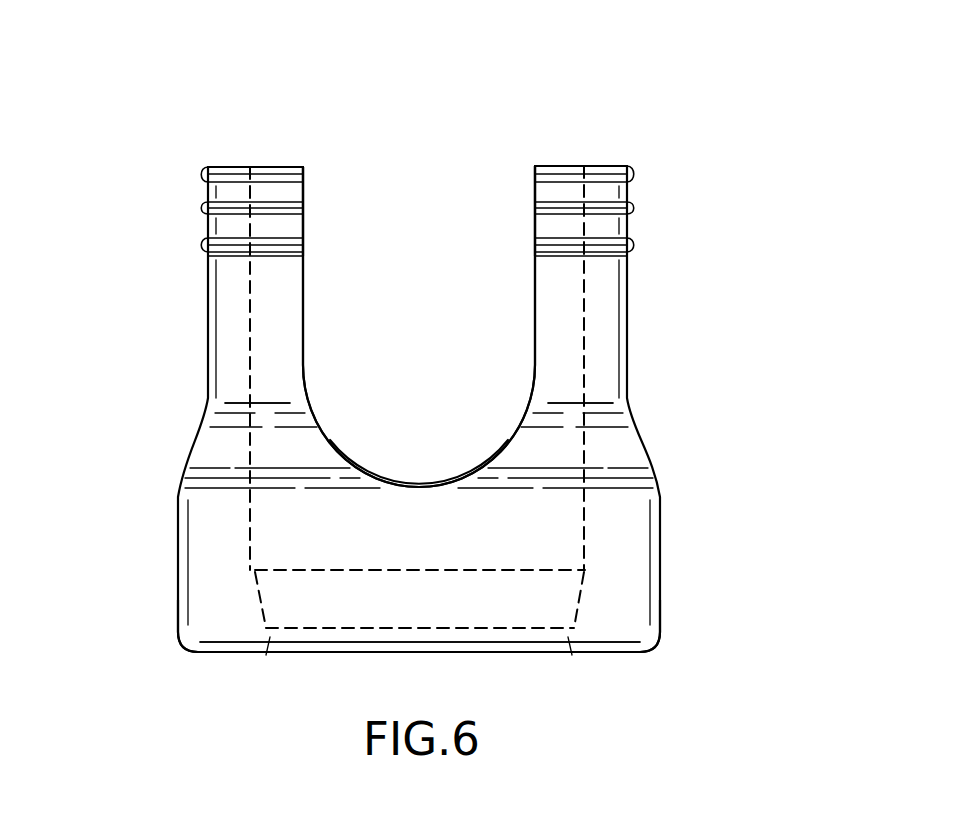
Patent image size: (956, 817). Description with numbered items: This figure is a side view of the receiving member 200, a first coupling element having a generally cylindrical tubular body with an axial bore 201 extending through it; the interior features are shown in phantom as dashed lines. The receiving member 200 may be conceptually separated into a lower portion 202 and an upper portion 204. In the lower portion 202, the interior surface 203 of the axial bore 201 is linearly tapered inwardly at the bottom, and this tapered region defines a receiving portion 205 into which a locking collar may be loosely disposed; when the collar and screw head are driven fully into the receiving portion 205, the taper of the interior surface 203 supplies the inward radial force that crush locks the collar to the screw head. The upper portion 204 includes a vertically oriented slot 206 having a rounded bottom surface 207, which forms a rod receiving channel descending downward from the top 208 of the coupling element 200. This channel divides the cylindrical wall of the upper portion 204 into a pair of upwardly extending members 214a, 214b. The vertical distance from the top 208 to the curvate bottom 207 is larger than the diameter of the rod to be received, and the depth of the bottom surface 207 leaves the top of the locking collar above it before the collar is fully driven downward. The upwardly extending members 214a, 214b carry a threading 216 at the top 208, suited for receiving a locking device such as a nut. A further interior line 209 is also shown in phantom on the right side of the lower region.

The receiving member 200 is at (732, 338).
The axial bore 201 is at (418, 151).
The lower portion 202 is at (682, 607).
The interior surface 203 is at (253, 363).
The upper portion 204 is at (151, 276).
The receiving portion 205 is at (458, 612).
The vertically oriented slot 206 is at (452, 318).
The rounded bottom surface 207 is at (413, 487).
The top 208 is at (581, 151).
The right partition wall 209 is at (585, 590).
The upwardly extending member 214a is at (627, 285).
The upwardly extending member 214b is at (230, 297).
The threading 216 is at (205, 177).